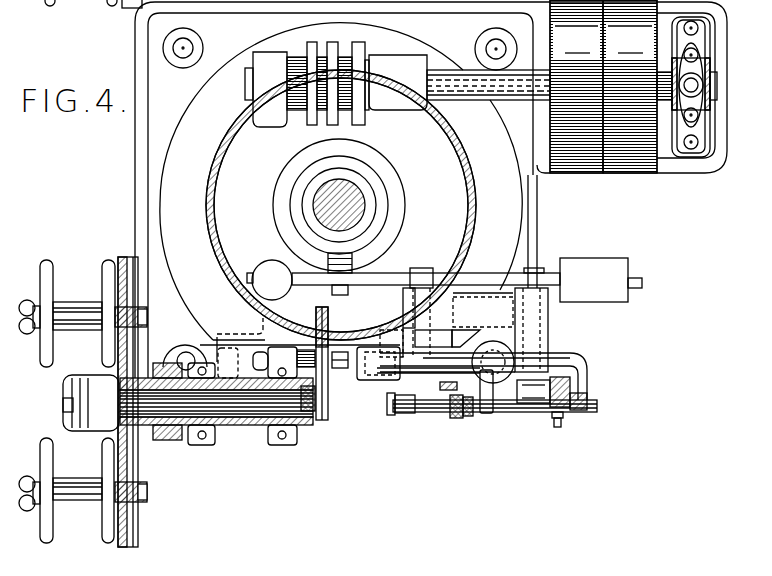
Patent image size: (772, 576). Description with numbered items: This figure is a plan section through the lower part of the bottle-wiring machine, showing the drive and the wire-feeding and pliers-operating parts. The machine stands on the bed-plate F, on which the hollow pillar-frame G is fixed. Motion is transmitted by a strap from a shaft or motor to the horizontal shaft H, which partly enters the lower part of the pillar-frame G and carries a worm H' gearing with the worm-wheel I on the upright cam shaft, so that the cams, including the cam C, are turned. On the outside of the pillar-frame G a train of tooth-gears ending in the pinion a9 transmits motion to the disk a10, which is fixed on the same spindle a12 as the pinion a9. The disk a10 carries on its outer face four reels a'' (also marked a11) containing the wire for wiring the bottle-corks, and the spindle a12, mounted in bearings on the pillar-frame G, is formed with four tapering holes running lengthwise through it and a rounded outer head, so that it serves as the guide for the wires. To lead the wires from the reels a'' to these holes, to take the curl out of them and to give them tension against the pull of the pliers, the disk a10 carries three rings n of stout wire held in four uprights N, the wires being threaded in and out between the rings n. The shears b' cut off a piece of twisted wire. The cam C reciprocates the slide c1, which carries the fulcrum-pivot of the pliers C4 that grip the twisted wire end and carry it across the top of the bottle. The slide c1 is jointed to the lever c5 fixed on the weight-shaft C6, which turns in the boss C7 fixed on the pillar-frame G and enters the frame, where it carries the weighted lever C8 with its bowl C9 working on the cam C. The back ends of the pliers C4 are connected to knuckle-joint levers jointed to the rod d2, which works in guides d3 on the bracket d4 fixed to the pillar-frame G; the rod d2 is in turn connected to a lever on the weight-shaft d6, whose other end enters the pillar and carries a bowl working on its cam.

The bed-plate F is at (340, 60).
The hollow pillar-frame G is at (468, 220).
The cam C is at (339, 205).
The worm-wheel I is at (339, 205).
The worm H' is at (336, 79).
The horizontal shaft H is at (488, 85).
The disk a10 is at (125, 262).
The reels a'' is at (83, 313).
The spindle a12 is at (83, 490).
The uprights N is at (82, 400).
The rings n is at (62, 409).
The reels a11 is at (318, 420).
The tooth-gear a9 is at (168, 440).
The shears b' is at (332, 372).
The bowl C9 is at (309, 276).
The weighted lever C8 is at (426, 273).
The weight-shaft C6 is at (418, 272).
The boss C7 is at (483, 338).
The weight-shaft d6 is at (573, 315).
The bracket d4 is at (585, 374).
The rod d2 is at (592, 407).
The guides d3 is at (575, 411).
The lever c5 is at (465, 401).
The slide c1 is at (453, 380).
The pliers C4 is at (392, 404).